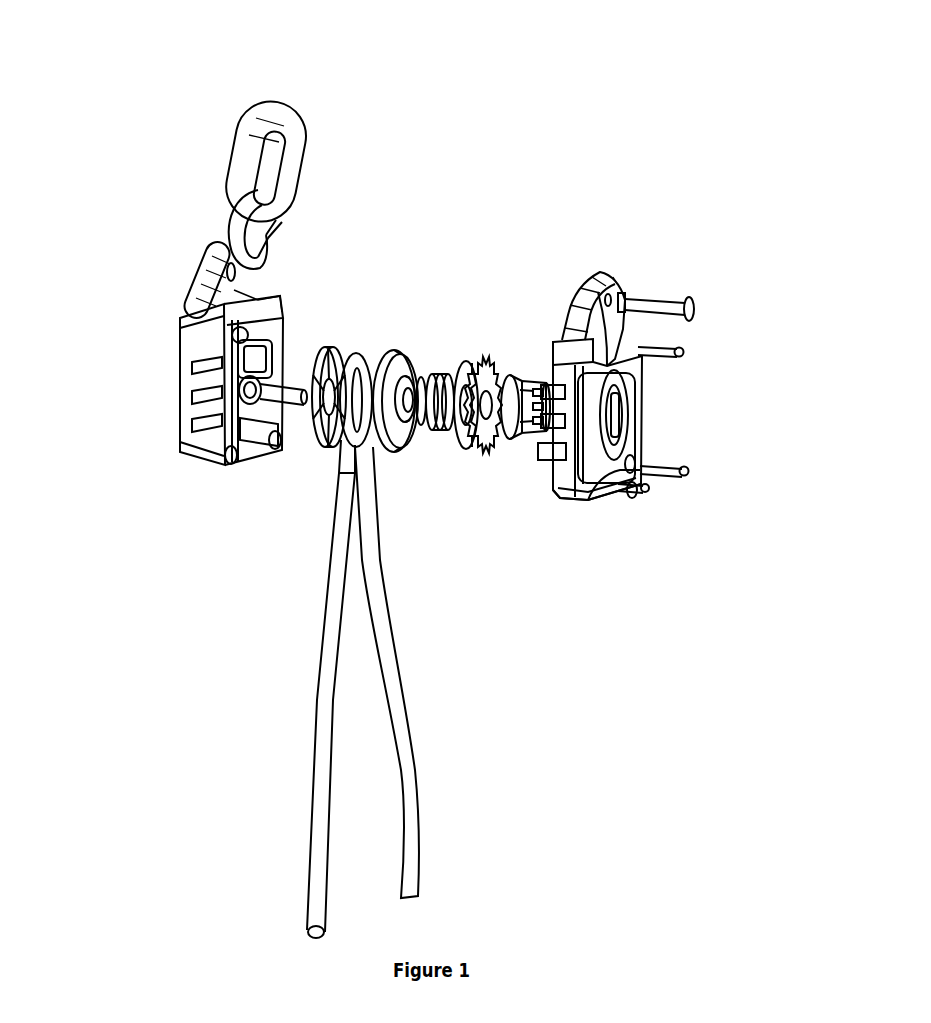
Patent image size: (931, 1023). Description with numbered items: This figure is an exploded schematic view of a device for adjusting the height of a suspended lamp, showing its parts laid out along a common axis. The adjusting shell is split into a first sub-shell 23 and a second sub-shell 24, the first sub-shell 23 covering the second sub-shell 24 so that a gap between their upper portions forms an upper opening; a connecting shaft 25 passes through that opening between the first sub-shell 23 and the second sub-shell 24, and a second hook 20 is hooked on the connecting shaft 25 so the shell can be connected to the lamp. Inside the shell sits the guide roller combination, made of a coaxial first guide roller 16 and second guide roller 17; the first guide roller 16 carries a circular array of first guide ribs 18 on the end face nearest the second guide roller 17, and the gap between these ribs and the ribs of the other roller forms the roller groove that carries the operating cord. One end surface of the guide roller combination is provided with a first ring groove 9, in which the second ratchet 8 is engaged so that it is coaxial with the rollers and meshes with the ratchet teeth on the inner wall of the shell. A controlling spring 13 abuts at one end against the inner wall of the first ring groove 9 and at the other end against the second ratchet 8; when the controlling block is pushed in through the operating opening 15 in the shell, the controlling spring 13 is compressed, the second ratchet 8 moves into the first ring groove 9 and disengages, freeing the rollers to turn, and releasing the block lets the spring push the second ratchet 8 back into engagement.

The second hook 20 is at (262, 140).
The first sub-shell 23 is at (195, 447).
The first guide roller 16 is at (316, 440).
The first guide rib 18 is at (322, 450).
The first ring groove 9 is at (427, 377).
The second guide roller 17 is at (393, 452).
The second ratchet 8 is at (471, 360).
The controlling spring 13 is at (445, 430).
The operating opening 15 is at (645, 428).
The second sub-shell 24 is at (585, 500).
The connecting shaft 25 is at (690, 297).